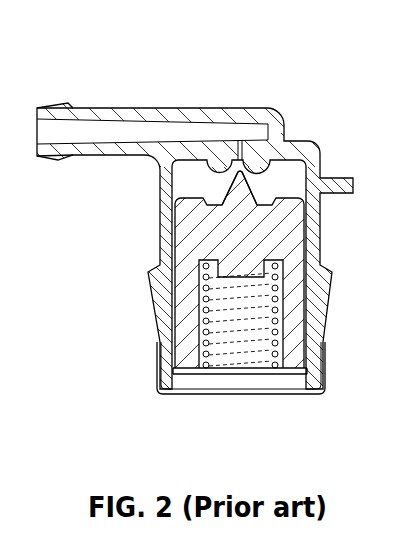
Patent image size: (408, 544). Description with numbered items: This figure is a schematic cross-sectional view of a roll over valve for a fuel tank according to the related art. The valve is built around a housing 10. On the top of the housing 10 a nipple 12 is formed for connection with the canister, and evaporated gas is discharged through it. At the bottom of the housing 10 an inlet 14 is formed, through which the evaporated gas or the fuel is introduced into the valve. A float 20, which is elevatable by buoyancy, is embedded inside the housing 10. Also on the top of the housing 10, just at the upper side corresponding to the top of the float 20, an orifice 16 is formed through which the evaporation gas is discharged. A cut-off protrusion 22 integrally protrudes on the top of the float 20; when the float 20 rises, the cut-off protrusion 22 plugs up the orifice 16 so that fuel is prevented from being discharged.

The housing 10 is at (147, 275).
The nipple 12 is at (78, 117).
The inlet 14 is at (238, 374).
The orifice 16 is at (266, 158).
The float 20 is at (188, 332).
The cut-off protrusion 22 is at (257, 187).